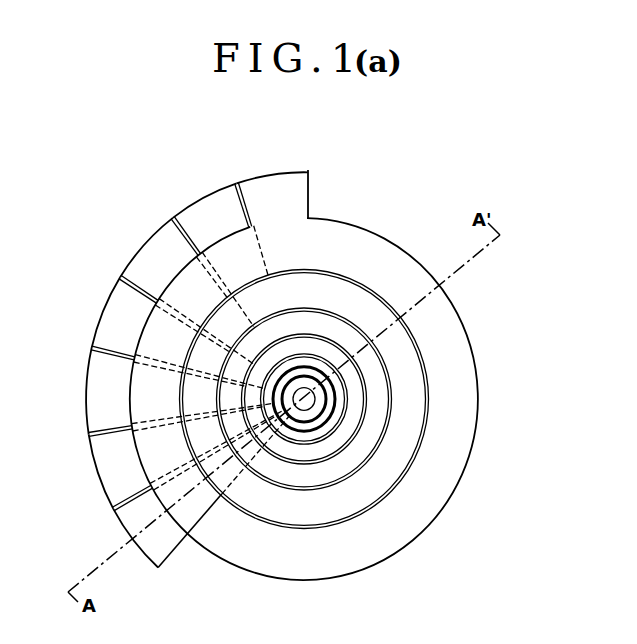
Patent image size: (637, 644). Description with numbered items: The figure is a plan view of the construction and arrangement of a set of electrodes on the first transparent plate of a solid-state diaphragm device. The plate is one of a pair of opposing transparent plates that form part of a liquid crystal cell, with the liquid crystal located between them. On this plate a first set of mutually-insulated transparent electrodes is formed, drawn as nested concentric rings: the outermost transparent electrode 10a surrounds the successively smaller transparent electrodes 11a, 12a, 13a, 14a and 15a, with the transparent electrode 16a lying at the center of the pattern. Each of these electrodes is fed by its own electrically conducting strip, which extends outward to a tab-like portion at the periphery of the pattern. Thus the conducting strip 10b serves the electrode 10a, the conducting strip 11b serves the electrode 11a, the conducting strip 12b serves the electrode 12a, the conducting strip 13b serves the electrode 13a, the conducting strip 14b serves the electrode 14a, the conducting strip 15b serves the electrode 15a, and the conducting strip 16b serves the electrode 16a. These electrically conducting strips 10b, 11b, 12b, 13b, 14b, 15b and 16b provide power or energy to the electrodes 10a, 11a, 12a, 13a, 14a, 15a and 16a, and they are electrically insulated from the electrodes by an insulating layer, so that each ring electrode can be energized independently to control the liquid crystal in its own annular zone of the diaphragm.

The transparent electrode 10a is at (337, 242).
The electrically conducting strip 10b is at (277, 186).
The transparent electrode 11a is at (355, 307).
The electrically conducting strip 11b is at (207, 210).
The transparent electrode 12a is at (375, 370).
The electrically conducting strip 12b is at (152, 253).
The transparent electrode 13a is at (345, 400).
The electrically conducting strip 13b is at (113, 323).
The transparent electrode 14a is at (345, 425).
The electrically conducting strip 14b is at (98, 401).
The transparent electrode 15a is at (340, 445).
The electrically conducting strip 15b is at (110, 471).
The transparent electrode 16a is at (330, 440).
The electrically conducting strip 16b is at (132, 524).